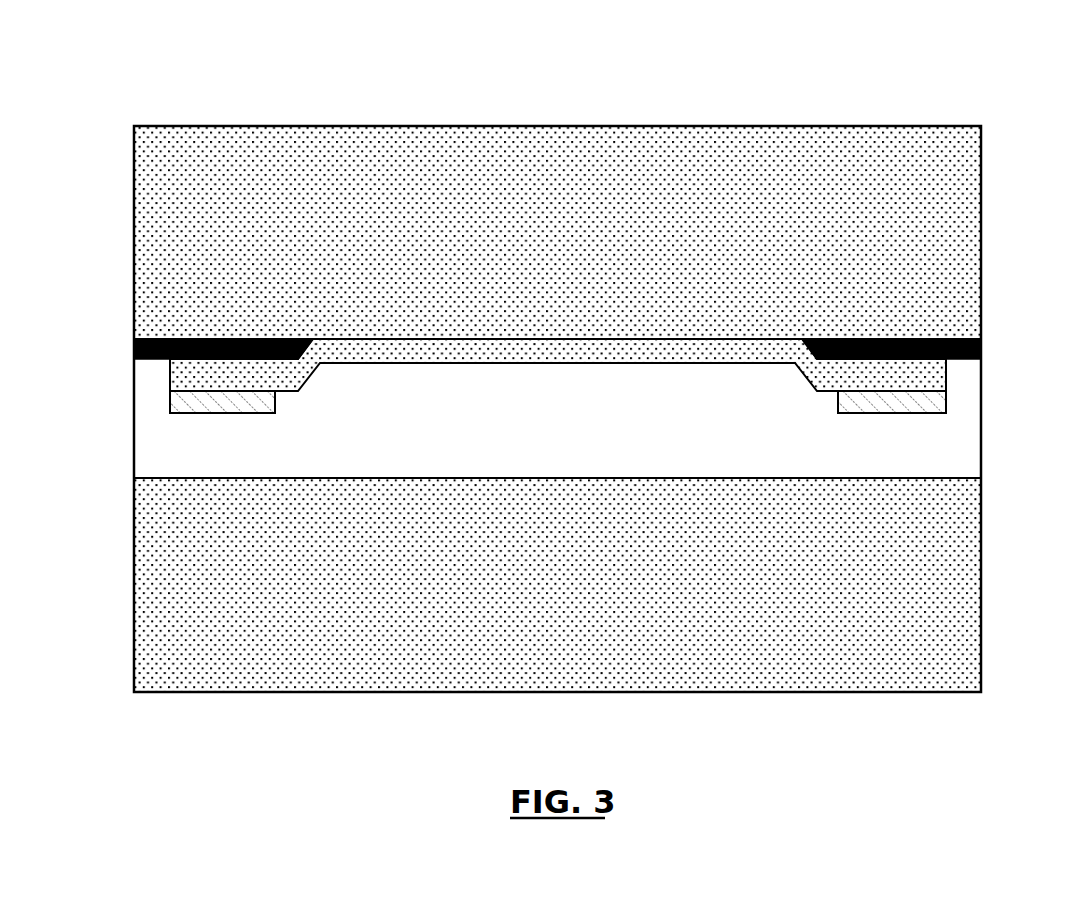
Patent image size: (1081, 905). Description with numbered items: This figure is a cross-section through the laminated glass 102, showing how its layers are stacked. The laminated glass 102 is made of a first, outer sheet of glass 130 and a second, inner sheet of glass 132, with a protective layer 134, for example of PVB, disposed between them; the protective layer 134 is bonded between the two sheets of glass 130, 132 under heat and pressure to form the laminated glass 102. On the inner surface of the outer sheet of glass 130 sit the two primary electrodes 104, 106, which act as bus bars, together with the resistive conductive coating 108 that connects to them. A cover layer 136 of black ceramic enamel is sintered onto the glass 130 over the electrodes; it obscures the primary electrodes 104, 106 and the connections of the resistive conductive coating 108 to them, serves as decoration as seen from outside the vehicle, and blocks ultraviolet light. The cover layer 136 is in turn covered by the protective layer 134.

The laminated glass 102 is at (568, 84).
The primary electrode 104 is at (170, 405).
The primary electrode 106 is at (946, 400).
The resistive conductive coating 108 is at (170, 374).
The first sheet of glass 130 is at (981, 232).
The second sheet of glass 132 is at (981, 583).
The protective layer 134 is at (981, 448).
The cover layer 136 is at (981, 350).